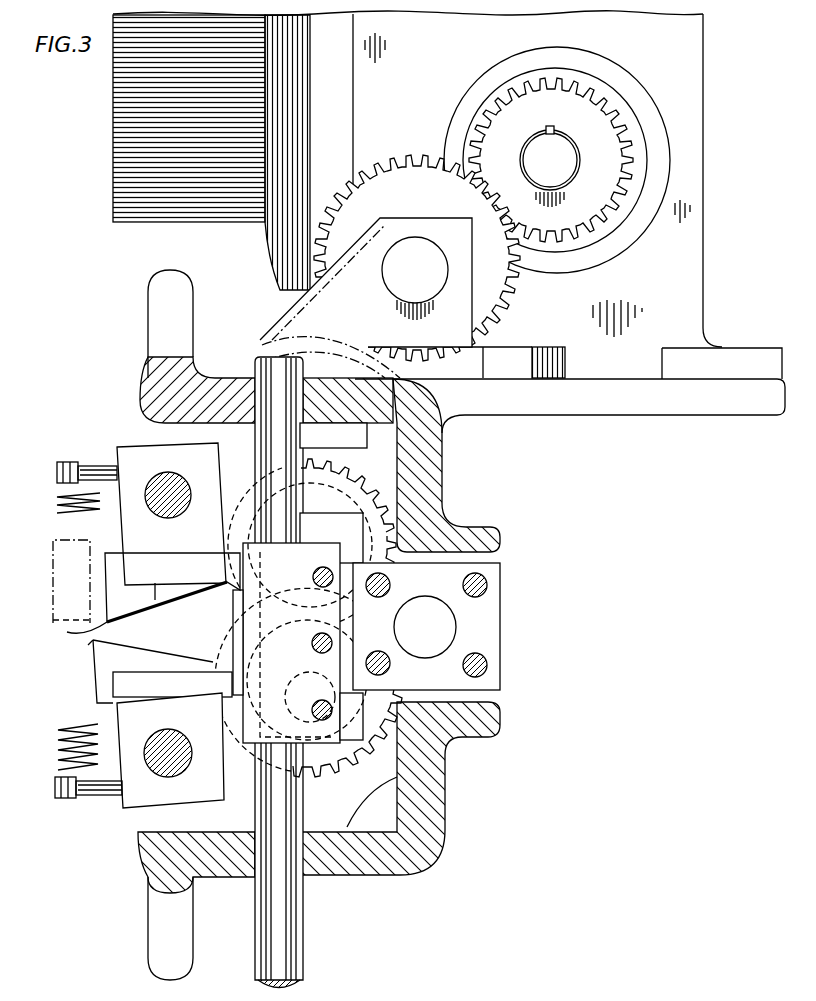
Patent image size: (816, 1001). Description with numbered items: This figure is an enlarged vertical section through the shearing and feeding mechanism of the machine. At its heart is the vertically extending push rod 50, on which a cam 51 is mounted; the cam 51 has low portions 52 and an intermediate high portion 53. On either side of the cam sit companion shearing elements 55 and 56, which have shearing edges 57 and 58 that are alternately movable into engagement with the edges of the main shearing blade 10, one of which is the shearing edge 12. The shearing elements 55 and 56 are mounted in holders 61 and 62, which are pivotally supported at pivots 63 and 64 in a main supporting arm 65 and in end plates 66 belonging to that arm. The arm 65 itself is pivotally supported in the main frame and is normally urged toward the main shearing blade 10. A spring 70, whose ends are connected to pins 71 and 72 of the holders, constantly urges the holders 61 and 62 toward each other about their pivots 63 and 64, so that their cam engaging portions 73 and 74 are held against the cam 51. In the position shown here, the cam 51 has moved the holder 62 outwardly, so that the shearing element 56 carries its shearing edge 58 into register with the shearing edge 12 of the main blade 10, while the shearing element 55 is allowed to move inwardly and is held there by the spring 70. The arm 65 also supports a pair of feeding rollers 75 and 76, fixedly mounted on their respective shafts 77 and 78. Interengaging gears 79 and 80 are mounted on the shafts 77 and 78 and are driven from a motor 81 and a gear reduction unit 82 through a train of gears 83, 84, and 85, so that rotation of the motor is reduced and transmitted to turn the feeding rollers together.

The main shearing blade 10 is at (53, 552).
The shearing edge 12 is at (53, 616).
The push rod 50 is at (297, 967).
The cam 51 is at (328, 598).
The low portions 52 is at (242, 562).
The intermediate high portion 53 is at (232, 618).
The shearing element 55 is at (137, 598).
The shearing element 56 is at (135, 660).
The shearing edge 57 is at (76, 630).
The shearing edge 58 is at (93, 640).
The holder 61 is at (130, 457).
The holder 62 is at (133, 793).
The pivot 63 is at (185, 493).
The pivot 64 is at (193, 757).
The main supporting arm 65 is at (367, 867).
The end plates 66 is at (142, 412).
The spring 70 is at (53, 745).
The pin 71 is at (68, 462).
The pin 72 is at (58, 793).
The cam engaging portion 73 is at (200, 570).
The cam engaging portion 74 is at (201, 673).
The feeding roller 75 is at (388, 563).
The feeding roller 76 is at (375, 760).
The shaft 77 is at (320, 533).
The shaft 78 is at (312, 673).
The gear 79 is at (374, 502).
The gear 80 is at (323, 783).
The motor 81 is at (113, 175).
The gear reduction unit 82 is at (698, 88).
The gear 83 is at (593, 215).
The gear 84 is at (513, 298).
The gear 85 is at (285, 332).